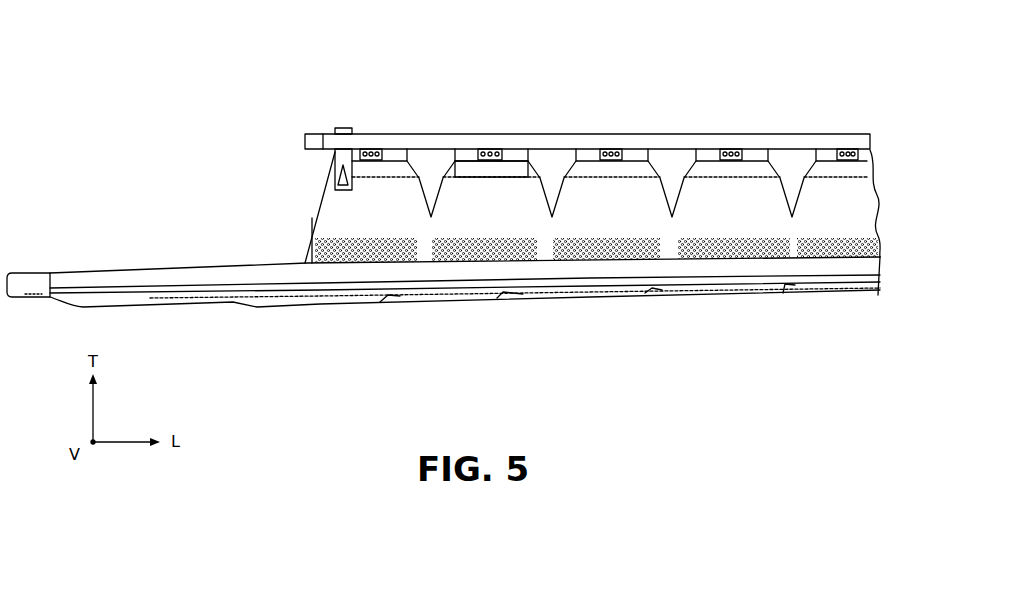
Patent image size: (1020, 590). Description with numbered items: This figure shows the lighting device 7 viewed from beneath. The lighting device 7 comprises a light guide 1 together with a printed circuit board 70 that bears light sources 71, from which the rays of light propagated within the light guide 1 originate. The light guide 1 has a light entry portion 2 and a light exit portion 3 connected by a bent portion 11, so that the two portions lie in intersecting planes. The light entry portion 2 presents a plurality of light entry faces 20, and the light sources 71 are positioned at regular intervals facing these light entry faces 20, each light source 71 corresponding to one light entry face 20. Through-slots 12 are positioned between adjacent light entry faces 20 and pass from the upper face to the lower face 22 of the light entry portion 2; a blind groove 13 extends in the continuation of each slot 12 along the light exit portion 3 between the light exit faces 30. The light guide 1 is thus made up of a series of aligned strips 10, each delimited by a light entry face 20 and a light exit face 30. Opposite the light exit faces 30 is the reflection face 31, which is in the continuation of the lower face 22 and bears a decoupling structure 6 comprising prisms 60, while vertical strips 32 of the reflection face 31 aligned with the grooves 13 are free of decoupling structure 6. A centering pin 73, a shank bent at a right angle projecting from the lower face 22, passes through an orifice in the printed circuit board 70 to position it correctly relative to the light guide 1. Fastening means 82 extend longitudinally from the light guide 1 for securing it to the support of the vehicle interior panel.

The light guide 1 is at (575, 326).
The light entry portion 2 is at (885, 168).
The light exit portion 3 is at (854, 309).
The decoupling structure 6 is at (843, 255).
The lighting device 7 is at (112, 87).
The strip 10 is at (420, 293).
The bent portion 11 is at (303, 260).
The slot 12 is at (788, 173).
The groove 13 is at (793, 283).
The light entry face 20 is at (758, 150).
The lower face 22 is at (503, 185).
The light exit face 30 is at (690, 288).
The reflection face 31 is at (337, 238).
The vertical strip 32 is at (790, 247).
The prism 60 is at (857, 253).
The printed circuit board 70 is at (722, 143).
The light source 71 is at (373, 148).
The centering pin 73 is at (332, 167).
The fastening means 82 is at (22, 282).